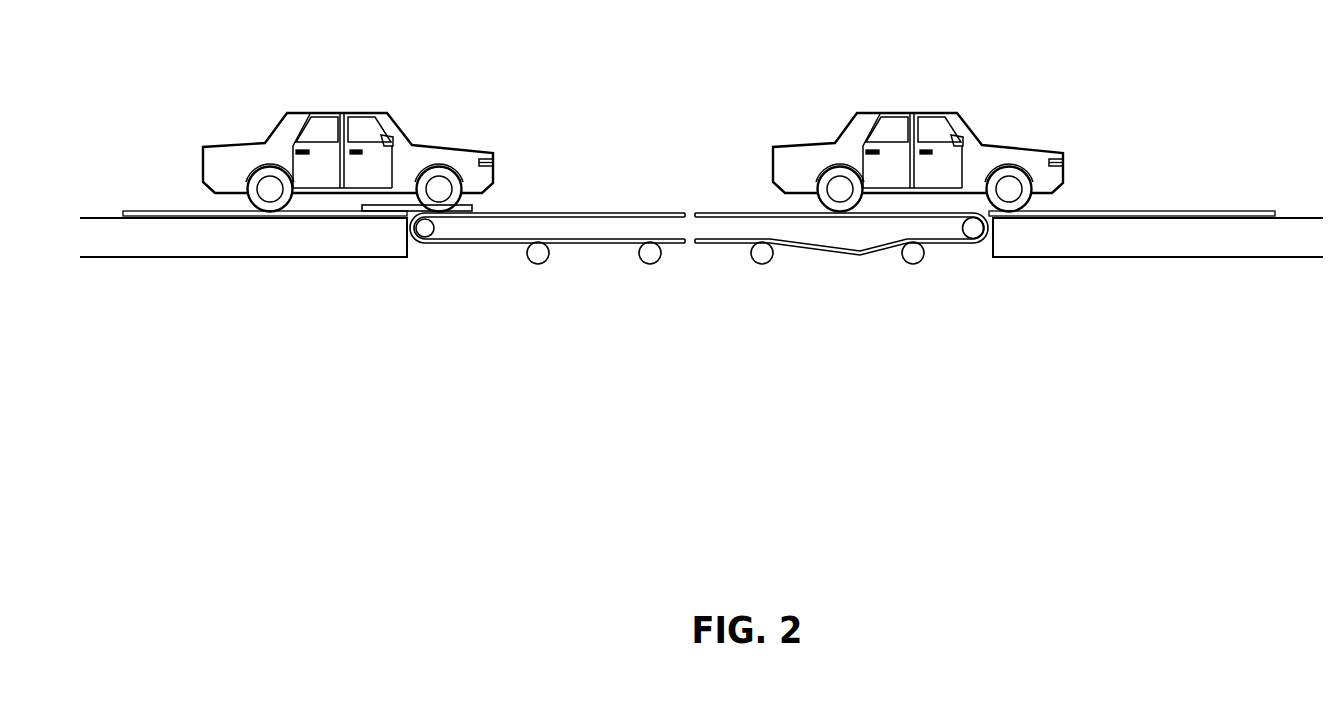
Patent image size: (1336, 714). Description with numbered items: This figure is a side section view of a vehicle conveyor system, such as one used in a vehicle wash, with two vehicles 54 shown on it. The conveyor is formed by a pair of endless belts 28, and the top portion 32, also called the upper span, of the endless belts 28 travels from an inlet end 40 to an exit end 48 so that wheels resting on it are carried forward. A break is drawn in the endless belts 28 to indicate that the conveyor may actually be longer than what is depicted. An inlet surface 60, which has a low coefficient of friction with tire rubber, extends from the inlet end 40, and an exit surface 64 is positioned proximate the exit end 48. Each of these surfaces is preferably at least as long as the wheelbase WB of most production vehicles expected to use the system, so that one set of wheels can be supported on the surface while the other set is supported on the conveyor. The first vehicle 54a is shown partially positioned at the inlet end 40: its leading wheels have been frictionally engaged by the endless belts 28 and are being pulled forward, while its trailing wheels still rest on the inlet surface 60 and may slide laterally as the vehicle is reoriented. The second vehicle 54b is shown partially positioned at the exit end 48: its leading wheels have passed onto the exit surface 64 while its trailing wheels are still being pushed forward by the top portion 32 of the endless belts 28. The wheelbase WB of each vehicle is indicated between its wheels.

The endless belts 28 is at (675, 231).
The top portion 32 is at (663, 214).
The inlet end 40 is at (457, 219).
The exit end 48 is at (940, 227).
The vehicle 54 is at (633, 176).
The vehicle 54a is at (348, 176).
The vehicle 54b is at (918, 176).
The inlet surface 60 is at (135, 211).
The exit surface 64 is at (1213, 212).
The wheelbase WB is at (270, 315).